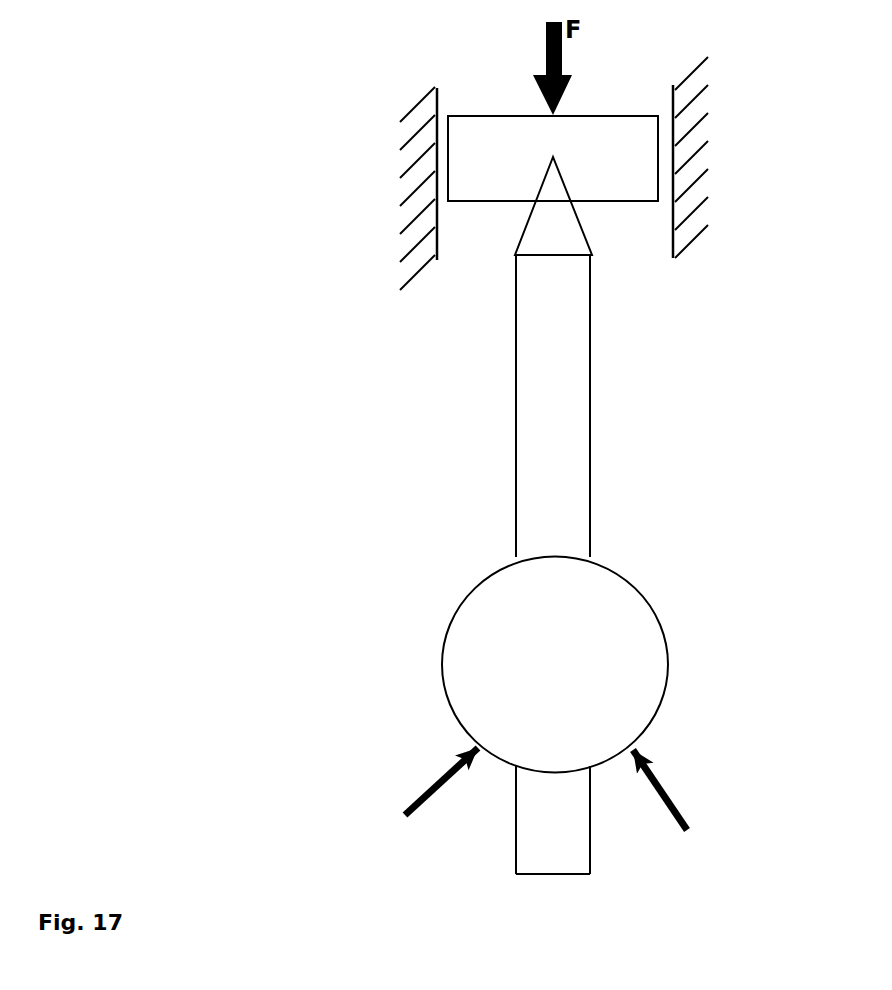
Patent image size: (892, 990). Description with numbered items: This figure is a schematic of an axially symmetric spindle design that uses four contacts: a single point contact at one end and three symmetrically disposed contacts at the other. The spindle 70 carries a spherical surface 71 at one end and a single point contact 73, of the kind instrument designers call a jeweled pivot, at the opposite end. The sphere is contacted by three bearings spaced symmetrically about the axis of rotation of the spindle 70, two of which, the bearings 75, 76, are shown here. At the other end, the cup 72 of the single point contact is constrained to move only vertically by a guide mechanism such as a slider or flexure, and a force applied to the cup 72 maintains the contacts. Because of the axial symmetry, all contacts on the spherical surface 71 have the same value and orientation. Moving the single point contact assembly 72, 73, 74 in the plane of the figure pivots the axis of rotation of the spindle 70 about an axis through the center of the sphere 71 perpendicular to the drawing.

The spindle 70 is at (595, 487).
The spherical surface 71 is at (447, 617).
The cup 72 is at (525, 108).
The single point contact 73 is at (553, 157).
The single point contact assembly guide 74 is at (678, 253).
The bearing 75 is at (637, 747).
The bearing 76 is at (473, 747).